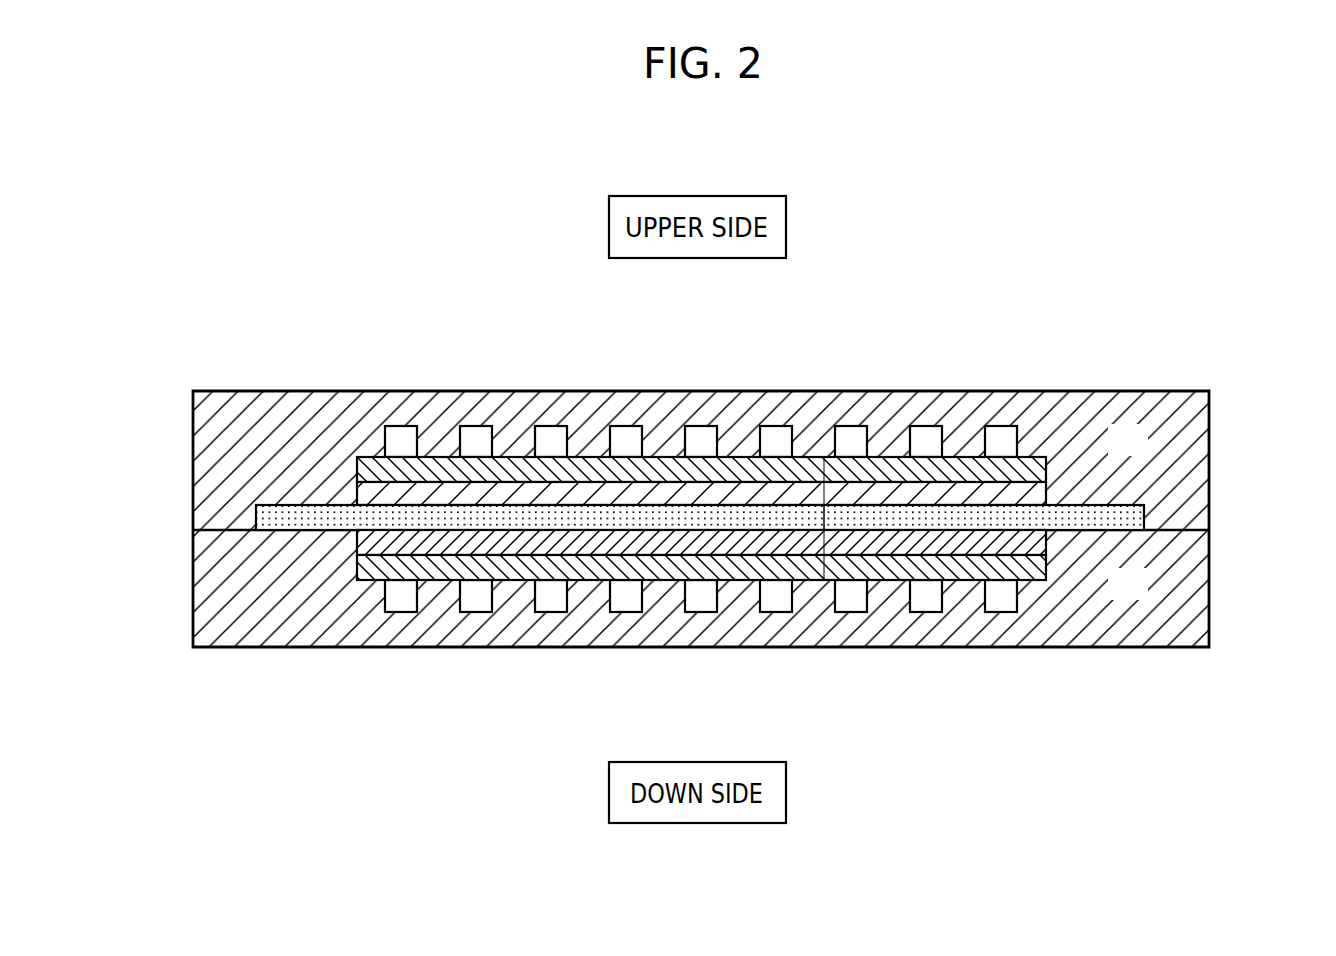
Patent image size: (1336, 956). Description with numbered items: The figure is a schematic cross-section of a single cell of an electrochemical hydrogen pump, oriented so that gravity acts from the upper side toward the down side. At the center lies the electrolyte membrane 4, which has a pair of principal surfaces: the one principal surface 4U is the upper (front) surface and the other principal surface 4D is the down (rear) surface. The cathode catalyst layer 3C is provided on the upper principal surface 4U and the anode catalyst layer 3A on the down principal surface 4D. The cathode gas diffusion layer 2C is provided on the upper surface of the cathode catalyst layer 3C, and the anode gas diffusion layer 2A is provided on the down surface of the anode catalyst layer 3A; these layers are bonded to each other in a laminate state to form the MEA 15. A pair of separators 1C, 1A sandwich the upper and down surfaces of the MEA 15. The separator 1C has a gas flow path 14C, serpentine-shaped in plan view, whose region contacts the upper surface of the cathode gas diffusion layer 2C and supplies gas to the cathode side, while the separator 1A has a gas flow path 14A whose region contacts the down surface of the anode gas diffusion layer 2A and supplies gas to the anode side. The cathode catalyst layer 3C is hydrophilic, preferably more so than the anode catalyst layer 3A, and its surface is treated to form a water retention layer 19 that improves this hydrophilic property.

The separator 1C is at (1143, 452).
The separator 1A is at (1143, 596).
The cathode gas diffusion layer 2C is at (355, 470).
The anode gas diffusion layer 2A is at (355, 570).
The cathode catalyst layer 3C is at (355, 493).
The anode catalyst layer 3A is at (355, 546).
The electrolyte membrane 4 is at (257, 520).
The principal surface 4U is at (1112, 507).
The principal surface 4D is at (1115, 535).
The gas flow path 14C is at (1017, 445).
The gas flow path 14A is at (1018, 600).
The MEA 15 is at (825, 517).
The water retention layer 19 is at (958, 457).